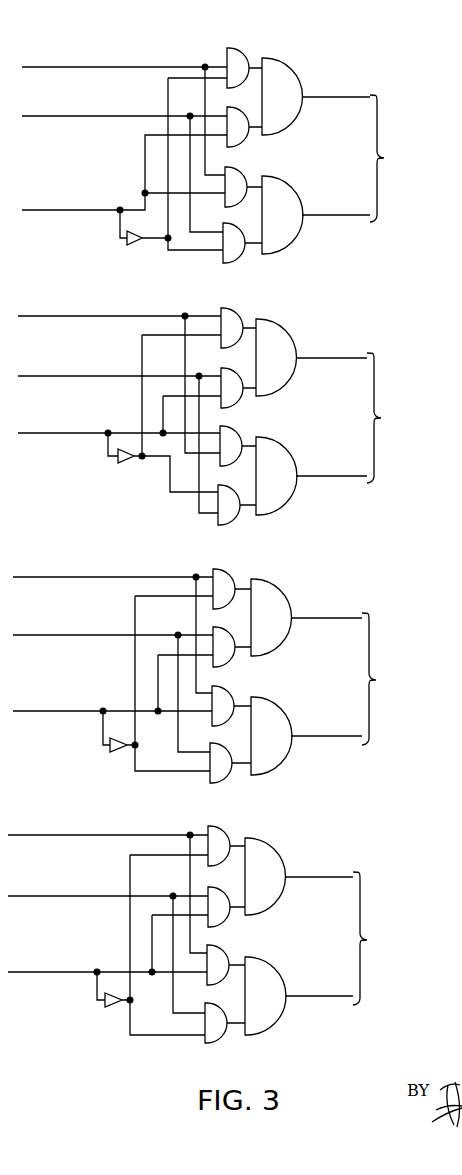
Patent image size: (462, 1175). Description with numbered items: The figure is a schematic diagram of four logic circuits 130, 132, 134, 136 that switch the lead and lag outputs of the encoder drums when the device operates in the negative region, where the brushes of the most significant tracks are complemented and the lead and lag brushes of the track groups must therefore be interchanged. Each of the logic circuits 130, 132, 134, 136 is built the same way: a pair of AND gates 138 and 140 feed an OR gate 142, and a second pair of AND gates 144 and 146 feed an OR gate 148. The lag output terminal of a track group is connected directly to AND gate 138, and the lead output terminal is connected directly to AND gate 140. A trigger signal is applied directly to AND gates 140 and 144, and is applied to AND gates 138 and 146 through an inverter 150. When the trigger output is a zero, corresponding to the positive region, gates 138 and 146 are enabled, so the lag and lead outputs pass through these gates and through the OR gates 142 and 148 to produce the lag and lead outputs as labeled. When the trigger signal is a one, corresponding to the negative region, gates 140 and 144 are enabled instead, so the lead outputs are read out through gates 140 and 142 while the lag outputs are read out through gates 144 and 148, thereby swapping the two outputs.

The logic circuit 130 is at (252, 50).
The logic circuit 132 is at (252, 309).
The logic circuit 134 is at (251, 567).
The logic circuit 136 is at (251, 828).
The AND gate 138 is at (226, 49).
The AND gate 140 is at (240, 112).
The OR gate 142 is at (297, 74).
The AND gate 144 is at (247, 171).
The AND gate 146 is at (240, 227).
The OR gate 148 is at (287, 194).
The inverter 150 is at (138, 243).